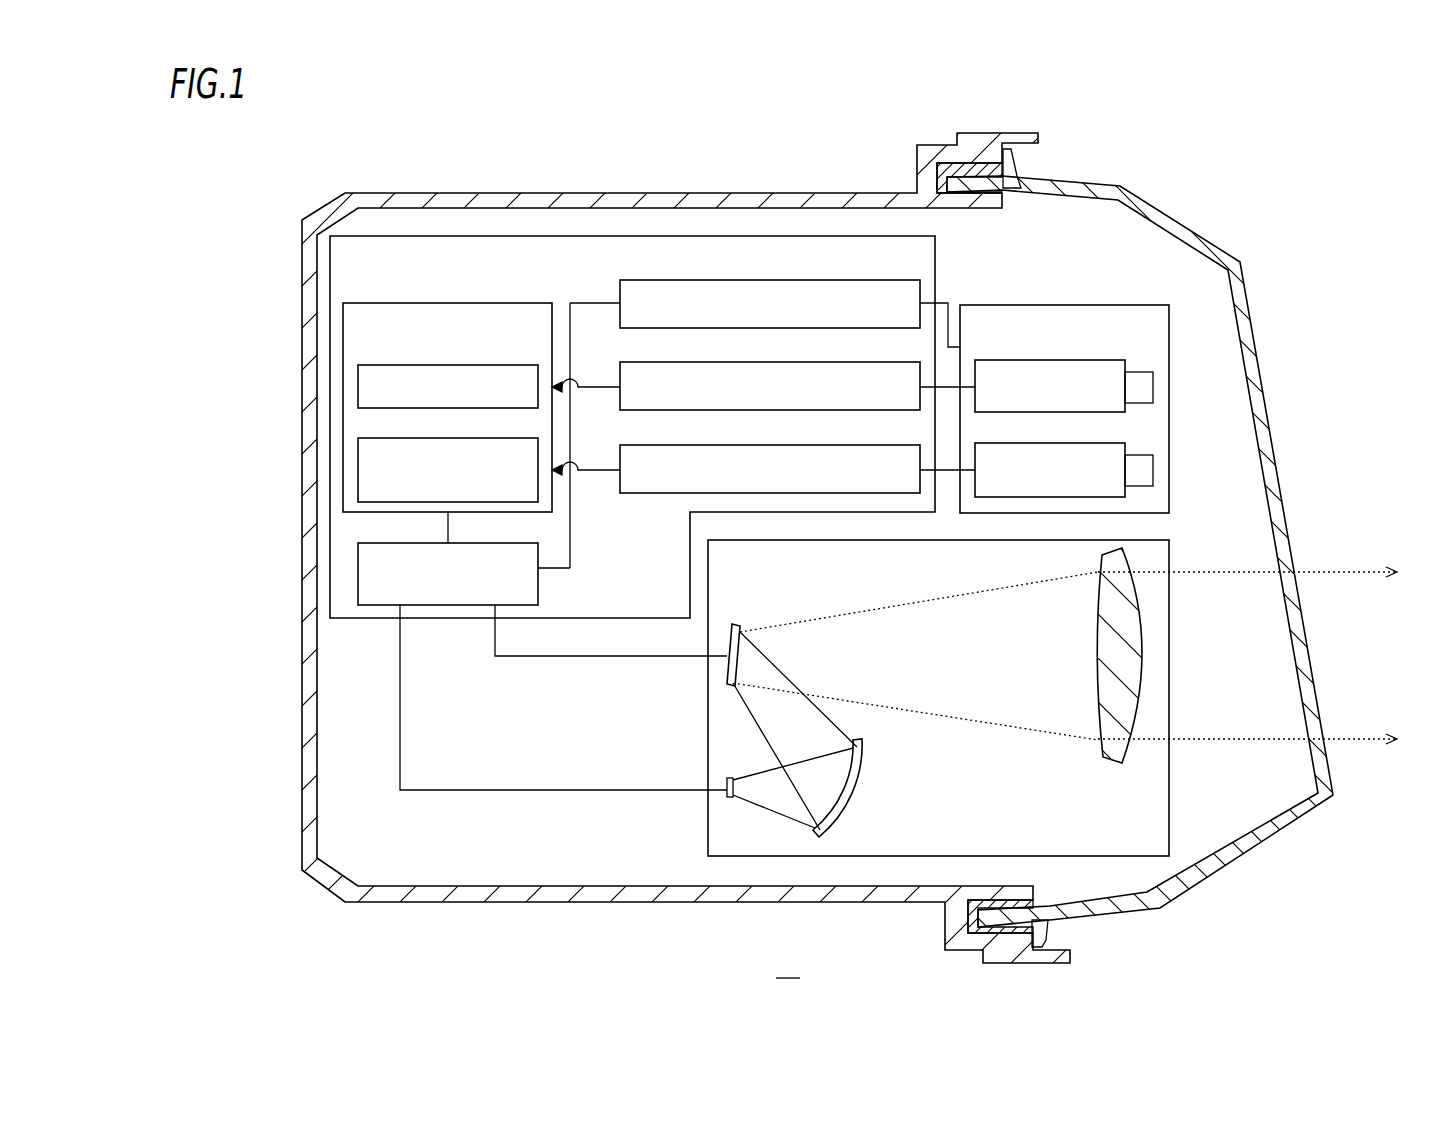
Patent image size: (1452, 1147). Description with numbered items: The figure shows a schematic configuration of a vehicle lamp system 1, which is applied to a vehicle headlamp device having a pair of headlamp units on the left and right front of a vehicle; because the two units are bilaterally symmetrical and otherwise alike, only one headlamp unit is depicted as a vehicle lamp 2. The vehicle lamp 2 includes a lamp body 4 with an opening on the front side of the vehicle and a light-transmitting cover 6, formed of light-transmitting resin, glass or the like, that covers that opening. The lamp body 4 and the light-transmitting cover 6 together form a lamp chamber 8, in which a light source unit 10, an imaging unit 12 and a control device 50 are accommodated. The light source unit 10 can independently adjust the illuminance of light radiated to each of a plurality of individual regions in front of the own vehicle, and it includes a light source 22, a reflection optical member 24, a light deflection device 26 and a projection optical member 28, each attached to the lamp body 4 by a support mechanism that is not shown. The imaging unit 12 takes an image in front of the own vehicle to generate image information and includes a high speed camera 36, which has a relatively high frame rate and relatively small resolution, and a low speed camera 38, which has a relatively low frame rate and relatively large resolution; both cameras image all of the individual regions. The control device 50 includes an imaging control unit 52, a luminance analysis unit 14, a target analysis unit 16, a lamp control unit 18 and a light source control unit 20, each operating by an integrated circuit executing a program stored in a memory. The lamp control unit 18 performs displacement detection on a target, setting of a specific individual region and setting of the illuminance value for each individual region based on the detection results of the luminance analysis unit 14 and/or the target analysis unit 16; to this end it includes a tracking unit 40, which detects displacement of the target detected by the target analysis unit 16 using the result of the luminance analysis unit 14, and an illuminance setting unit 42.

The vehicle lamp system 1 is at (788, 965).
The vehicle lamp 2 is at (1043, 130).
The lamp body 4 is at (405, 902).
The light-transmitting cover 6 is at (1205, 890).
The lamp chamber 8 is at (1247, 782).
The light source unit 10 is at (1169, 558).
The imaging unit 12 is at (1125, 305).
The luminance analysis unit 14 is at (882, 445).
The target analysis unit 16 is at (882, 362).
The lamp control unit 18 is at (512, 303).
The light source control unit 20 is at (500, 543).
The light source 22 is at (728, 797).
The reflection optical member 24 is at (852, 800).
The light deflection device 26 is at (735, 624).
The projection optical member 28 is at (1112, 763).
The high speed camera 36 is at (1085, 443).
The low speed camera 38 is at (1085, 360).
The tracking unit 40 is at (500, 365).
The illuminance setting unit 42 is at (500, 438).
The control device 50 is at (448, 618).
The imaging control unit 52 is at (882, 280).